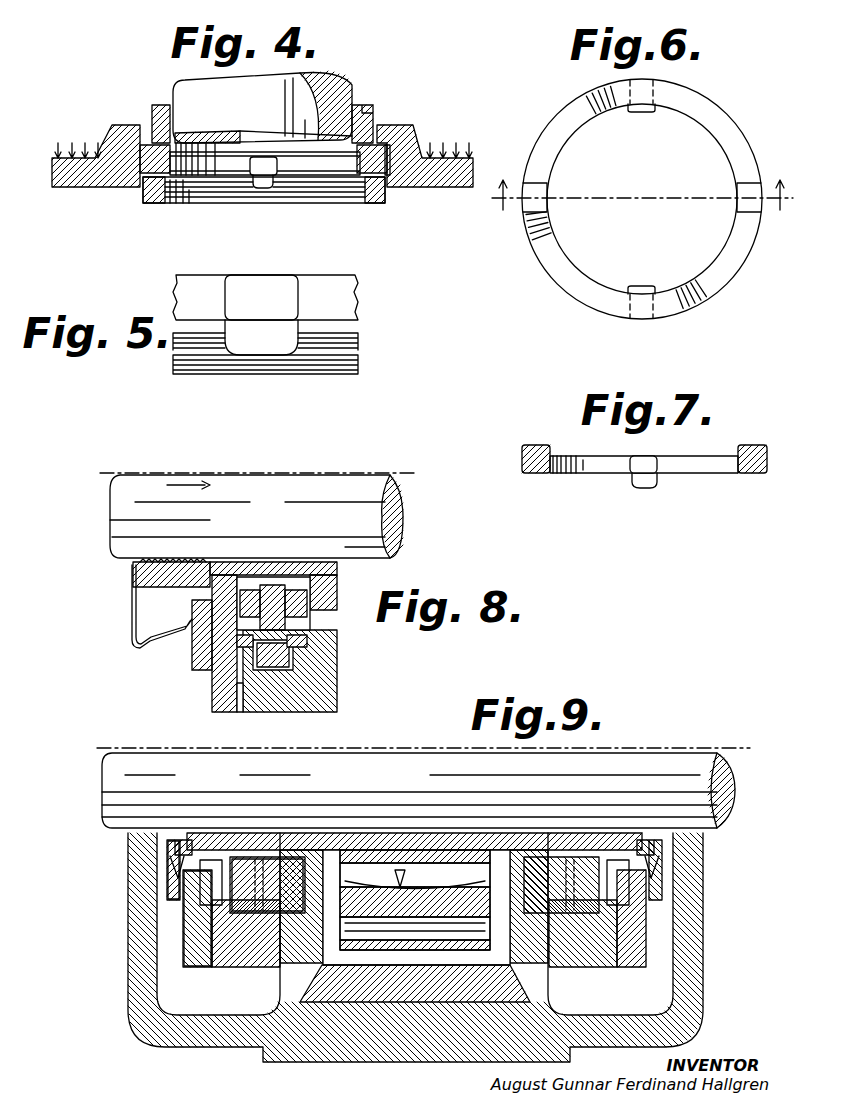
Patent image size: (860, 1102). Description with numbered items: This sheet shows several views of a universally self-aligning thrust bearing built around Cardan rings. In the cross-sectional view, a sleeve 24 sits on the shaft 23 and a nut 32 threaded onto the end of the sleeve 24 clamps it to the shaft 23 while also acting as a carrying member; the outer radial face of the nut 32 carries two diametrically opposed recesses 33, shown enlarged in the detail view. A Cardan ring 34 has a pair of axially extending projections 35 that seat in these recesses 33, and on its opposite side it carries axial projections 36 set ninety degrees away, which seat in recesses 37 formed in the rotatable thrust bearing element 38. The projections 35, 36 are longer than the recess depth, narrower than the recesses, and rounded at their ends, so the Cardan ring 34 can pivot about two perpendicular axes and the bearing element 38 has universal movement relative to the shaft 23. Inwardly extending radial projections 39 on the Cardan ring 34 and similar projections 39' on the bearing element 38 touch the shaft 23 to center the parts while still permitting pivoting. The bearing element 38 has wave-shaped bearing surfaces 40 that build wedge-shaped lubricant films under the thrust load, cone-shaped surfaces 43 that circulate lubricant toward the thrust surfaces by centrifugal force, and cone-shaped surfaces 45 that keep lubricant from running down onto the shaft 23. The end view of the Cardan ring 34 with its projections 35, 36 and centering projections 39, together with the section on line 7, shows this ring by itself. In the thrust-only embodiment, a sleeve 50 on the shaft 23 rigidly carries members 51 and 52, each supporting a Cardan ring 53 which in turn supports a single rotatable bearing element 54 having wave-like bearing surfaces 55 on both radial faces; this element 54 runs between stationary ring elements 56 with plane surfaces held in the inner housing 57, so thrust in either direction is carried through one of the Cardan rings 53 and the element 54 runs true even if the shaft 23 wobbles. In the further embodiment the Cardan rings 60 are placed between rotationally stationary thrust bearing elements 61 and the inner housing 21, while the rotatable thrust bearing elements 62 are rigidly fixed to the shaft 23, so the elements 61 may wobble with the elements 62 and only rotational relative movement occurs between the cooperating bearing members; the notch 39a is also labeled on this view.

In FIG. 6, the section line 7— 7 is at (642, 183).
In FIG. 9, the inner housing 21 is at (222, 957).
In FIG. 4, the shaft 23 is at (237, 92).
In FIG. 8, the shaft 23 is at (350, 478).
In FIG. 9, the shaft 23 is at (108, 806).
In FIG. 4, the sleeve 24 is at (169, 202).
In FIG. 4, the nut 32 is at (140, 197).
In FIG. 5, the nut 32 is at (345, 370).
In FIG. 4, the recesses 33 is at (252, 186).
In FIG. 5, the recesses 33 is at (236, 358).
In FIG. 4, the Cardan ring 34 is at (329, 168).
In FIG. 6, the Cardan ring 34 is at (741, 137).
In FIG. 5, the Cardan ring 34 is at (343, 283).
In FIG. 7, the Cardan ring 34 is at (721, 468).
In FIG. 4, the axially extending projections 35 is at (272, 184).
In FIG. 6, the axially extending projections 35 is at (662, 98).
In FIG. 5, the axially extending projections 35 is at (275, 348).
In FIG. 7, the axially extending projections 35 is at (642, 491).
In FIG. 4, the axial projections 36 is at (153, 143).
In FIG. 6, the axial projections 36 is at (530, 211).
In FIG. 7, the axial projections 36 is at (533, 444).
In FIG. 4, the recesses 37 is at (155, 138).
In FIG. 4, the rotatable thrust bearing element 38 is at (88, 182).
In FIG. 4, the inwardly extending radial projections 39 is at (272, 144).
In FIG. 6, the inwardly extending radial projections 39 is at (650, 199).
In FIG. 5, the inwardly extending radial projections 39 is at (261, 285).
In FIG. 7, the inwardly extending radial projections 39 is at (656, 452).
In FIG. 4, the inwardly extending radial projections 39' is at (263, 122).
In FIG. 9, the notch 39a is at (414, 917).
In FIG. 4, the bearing surfaces 40 is at (266, 136).
In FIG. 4, the cone-shaped surfaces 43 is at (104, 140).
In FIG. 4, the cone-shaped surfaces 45 is at (366, 108).
In FIG. 8, the sleeve 50 is at (282, 563).
In FIG. 8, the carrying member 51 is at (322, 592).
In FIG. 8, the carrying member 52 is at (223, 580).
In FIG. 8, the Cardan ring 53 is at (249, 590).
In FIG. 8, the rotatable bearing element 54 is at (277, 672).
In FIG. 8, the wave-like bearing surfaces 55 is at (287, 624).
In FIG. 8, the stationary ring elements 56 is at (297, 643).
In FIG. 8, the inner housing 57 is at (332, 700).
In FIG. 9, the Cardan rings 60 is at (246, 868).
In FIG. 9, the rotationally stationary thrust bearing elements 61 is at (277, 907).
In FIG. 9, the rotatable thrust bearing elements 62 is at (309, 850).